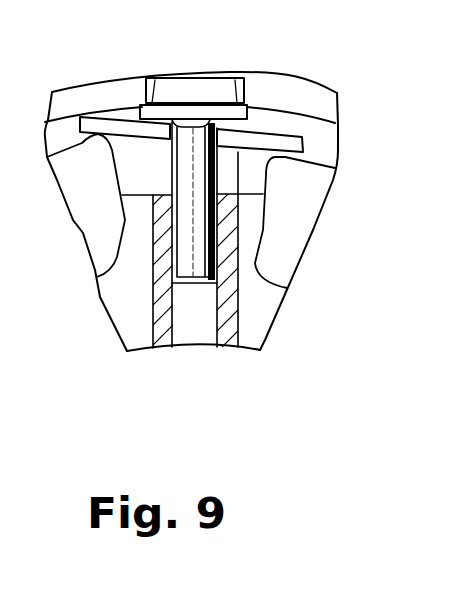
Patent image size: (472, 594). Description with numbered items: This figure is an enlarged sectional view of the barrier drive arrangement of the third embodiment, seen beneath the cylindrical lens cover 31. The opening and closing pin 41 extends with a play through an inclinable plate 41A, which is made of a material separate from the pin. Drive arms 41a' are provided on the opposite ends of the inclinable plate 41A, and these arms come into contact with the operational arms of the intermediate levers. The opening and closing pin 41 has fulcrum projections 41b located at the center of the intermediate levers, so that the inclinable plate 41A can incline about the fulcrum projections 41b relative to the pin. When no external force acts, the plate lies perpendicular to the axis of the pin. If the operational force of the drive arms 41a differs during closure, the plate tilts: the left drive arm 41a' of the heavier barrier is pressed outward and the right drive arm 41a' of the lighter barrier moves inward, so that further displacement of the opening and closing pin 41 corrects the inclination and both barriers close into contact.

The lens cover 31 is at (318, 107).
The opening and closing pin 41 is at (213, 95).
The drive arm 41a is at (203, 246).
The drive arm 41a' is at (244, 90).
The inclinable plate 41A is at (102, 128).
The fulcrum projection 41b is at (186, 115).